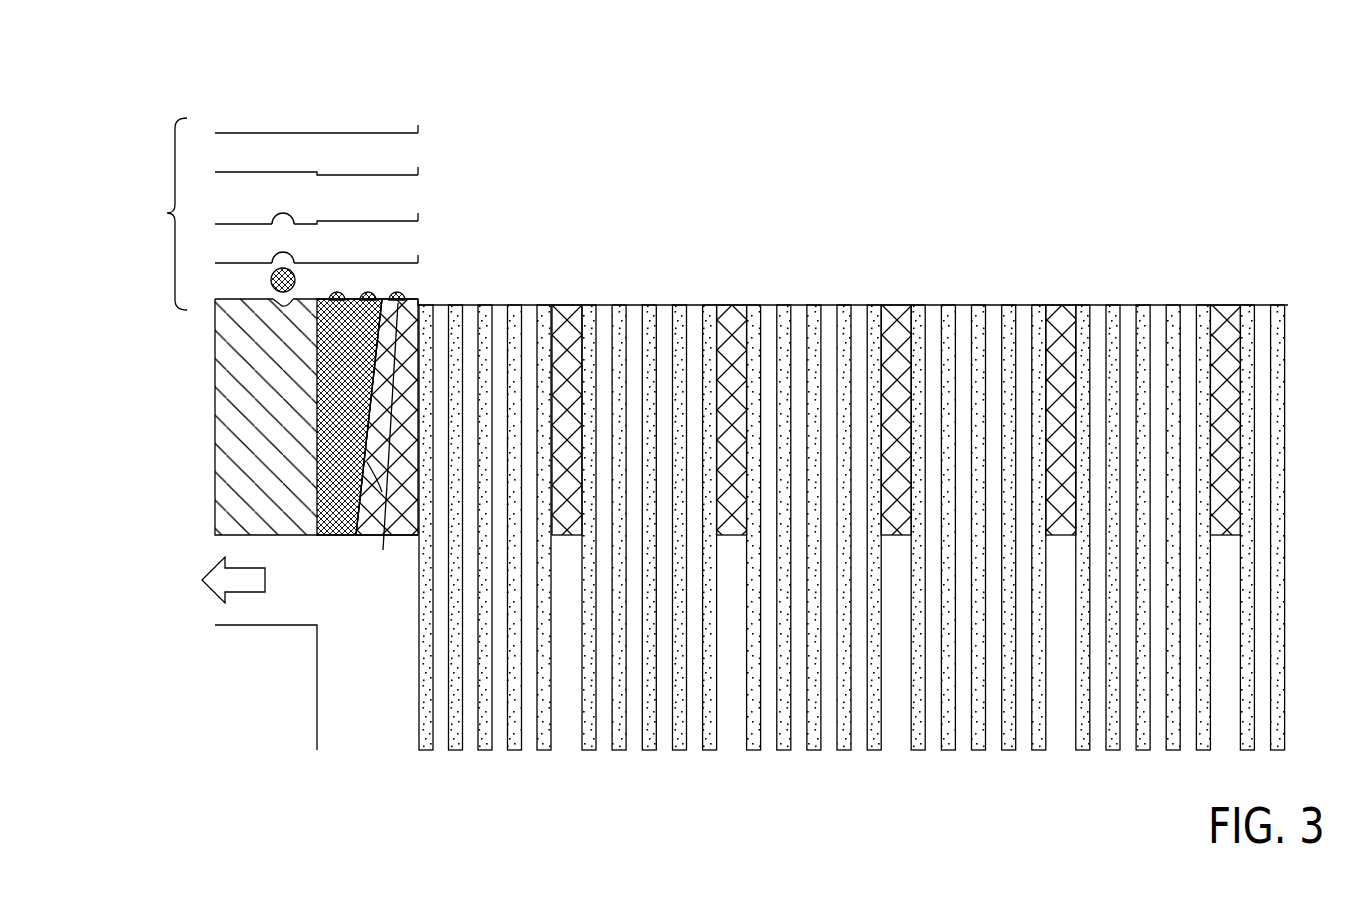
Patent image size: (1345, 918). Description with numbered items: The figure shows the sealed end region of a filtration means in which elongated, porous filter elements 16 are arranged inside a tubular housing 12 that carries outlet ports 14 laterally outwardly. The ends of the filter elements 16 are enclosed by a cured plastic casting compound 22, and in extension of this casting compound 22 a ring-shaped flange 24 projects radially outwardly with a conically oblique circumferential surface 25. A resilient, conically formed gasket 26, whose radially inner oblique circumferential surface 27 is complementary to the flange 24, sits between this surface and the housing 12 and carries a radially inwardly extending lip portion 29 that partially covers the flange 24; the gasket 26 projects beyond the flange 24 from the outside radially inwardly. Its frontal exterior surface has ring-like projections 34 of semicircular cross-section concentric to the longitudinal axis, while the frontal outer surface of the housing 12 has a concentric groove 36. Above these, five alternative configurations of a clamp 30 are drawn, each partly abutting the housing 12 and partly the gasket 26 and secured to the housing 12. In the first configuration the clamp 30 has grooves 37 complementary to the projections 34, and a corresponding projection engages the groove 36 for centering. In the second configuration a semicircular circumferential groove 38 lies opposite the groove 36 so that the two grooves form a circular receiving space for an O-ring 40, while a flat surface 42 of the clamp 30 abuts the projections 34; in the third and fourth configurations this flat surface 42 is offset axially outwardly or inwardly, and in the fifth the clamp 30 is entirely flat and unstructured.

The housing 12 is at (265, 418).
The outlet ports 14 is at (196, 601).
The filter elements 16 is at (490, 282).
The casting compound 22 is at (564, 333).
The flange 24 is at (399, 480).
The circumferential surface 25 is at (367, 462).
The gasket 26 is at (353, 300).
The circumferential surface 27 is at (381, 492).
The lip portion 29 is at (383, 550).
The clamp 30 is at (273, 216).
The projections 34 is at (328, 327).
The groove 36 is at (290, 301).
The grooves 37 is at (367, 298).
The circumferential groove 38 is at (275, 266).
The O-ring 40 is at (295, 263).
The flat surface 42 is at (398, 175).